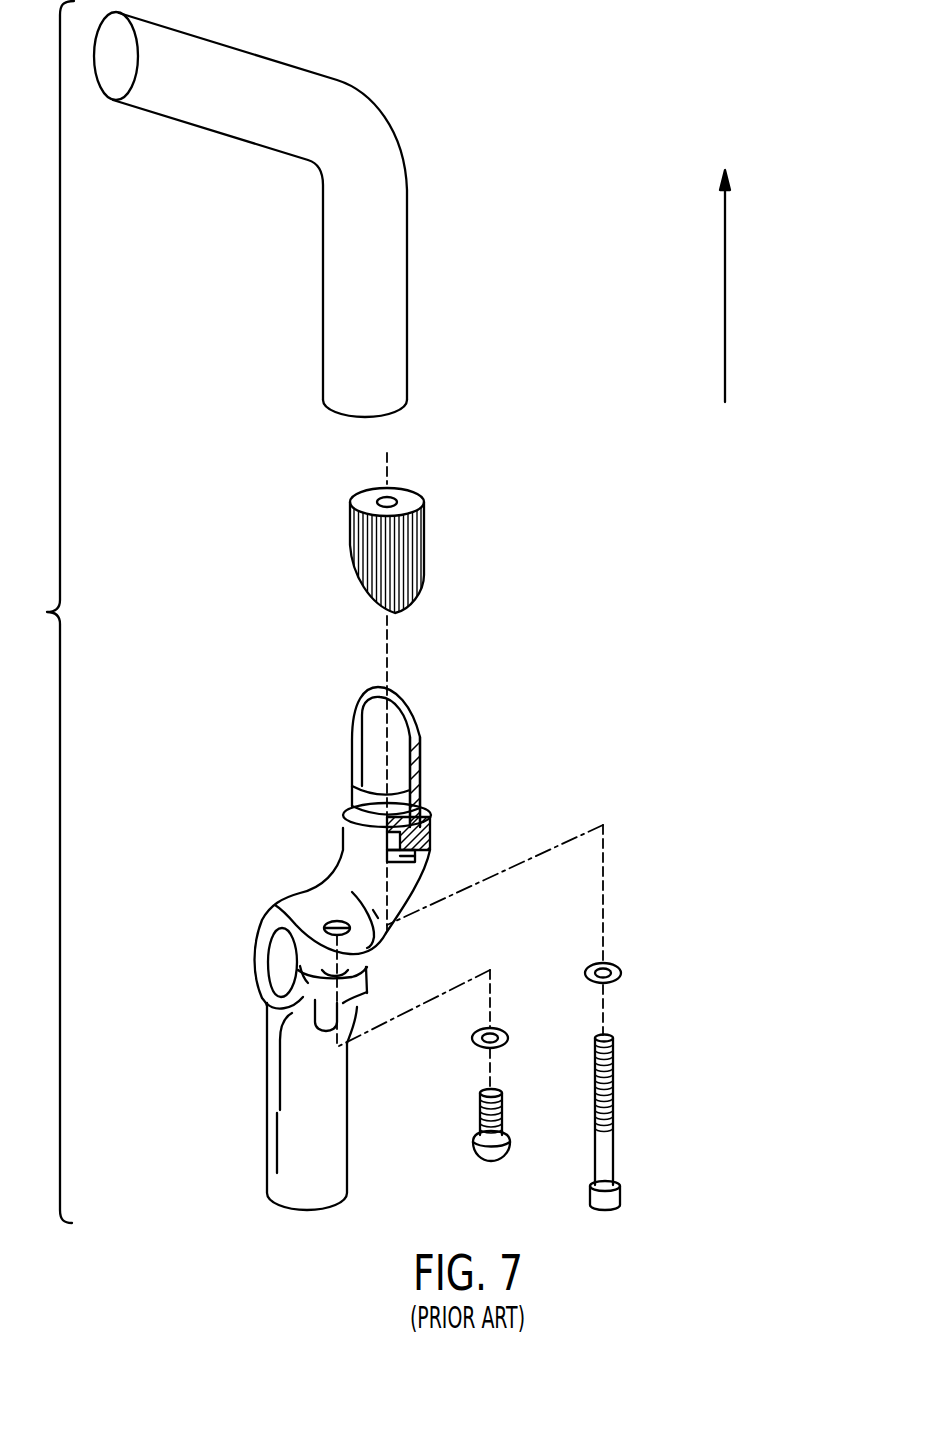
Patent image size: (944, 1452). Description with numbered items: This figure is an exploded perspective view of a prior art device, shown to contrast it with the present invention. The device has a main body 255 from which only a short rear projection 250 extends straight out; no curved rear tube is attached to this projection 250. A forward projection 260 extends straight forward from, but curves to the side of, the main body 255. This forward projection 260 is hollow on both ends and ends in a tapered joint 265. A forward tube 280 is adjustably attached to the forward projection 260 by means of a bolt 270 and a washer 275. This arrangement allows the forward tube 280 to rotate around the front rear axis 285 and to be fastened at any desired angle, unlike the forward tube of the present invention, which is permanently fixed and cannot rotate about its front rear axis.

The rear projection 250 is at (292, 1130).
The main body 255 is at (281, 903).
The forward projection 260 is at (352, 763).
The tapered joint 265 is at (412, 732).
The bolt 270 is at (608, 1155).
The washer 275 is at (410, 543).
The forward tube 280 is at (387, 290).
The front rear axis 285 is at (725, 257).